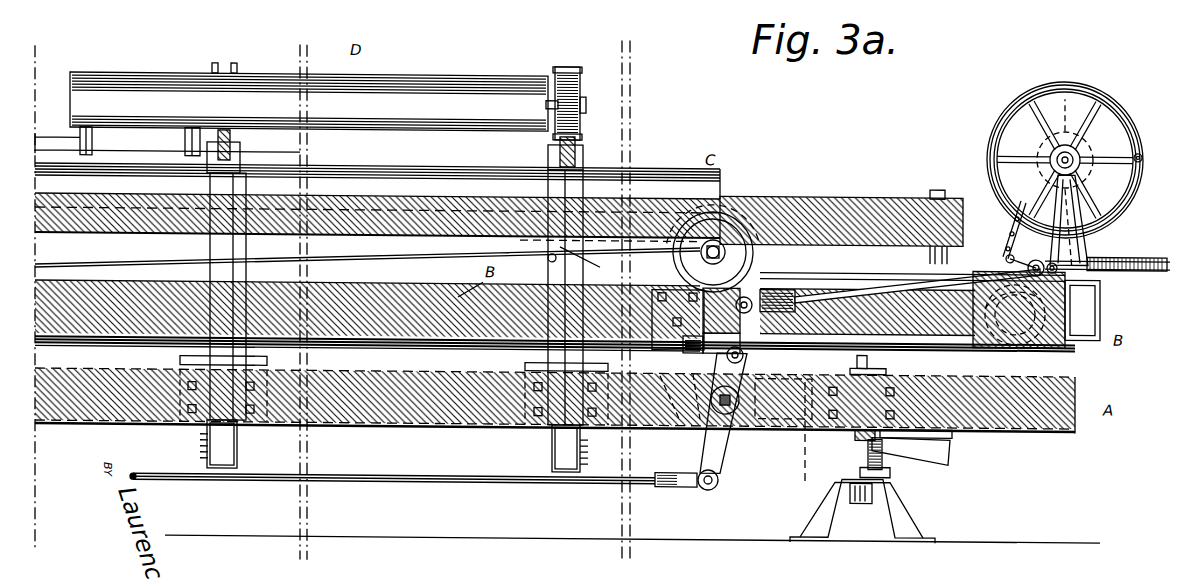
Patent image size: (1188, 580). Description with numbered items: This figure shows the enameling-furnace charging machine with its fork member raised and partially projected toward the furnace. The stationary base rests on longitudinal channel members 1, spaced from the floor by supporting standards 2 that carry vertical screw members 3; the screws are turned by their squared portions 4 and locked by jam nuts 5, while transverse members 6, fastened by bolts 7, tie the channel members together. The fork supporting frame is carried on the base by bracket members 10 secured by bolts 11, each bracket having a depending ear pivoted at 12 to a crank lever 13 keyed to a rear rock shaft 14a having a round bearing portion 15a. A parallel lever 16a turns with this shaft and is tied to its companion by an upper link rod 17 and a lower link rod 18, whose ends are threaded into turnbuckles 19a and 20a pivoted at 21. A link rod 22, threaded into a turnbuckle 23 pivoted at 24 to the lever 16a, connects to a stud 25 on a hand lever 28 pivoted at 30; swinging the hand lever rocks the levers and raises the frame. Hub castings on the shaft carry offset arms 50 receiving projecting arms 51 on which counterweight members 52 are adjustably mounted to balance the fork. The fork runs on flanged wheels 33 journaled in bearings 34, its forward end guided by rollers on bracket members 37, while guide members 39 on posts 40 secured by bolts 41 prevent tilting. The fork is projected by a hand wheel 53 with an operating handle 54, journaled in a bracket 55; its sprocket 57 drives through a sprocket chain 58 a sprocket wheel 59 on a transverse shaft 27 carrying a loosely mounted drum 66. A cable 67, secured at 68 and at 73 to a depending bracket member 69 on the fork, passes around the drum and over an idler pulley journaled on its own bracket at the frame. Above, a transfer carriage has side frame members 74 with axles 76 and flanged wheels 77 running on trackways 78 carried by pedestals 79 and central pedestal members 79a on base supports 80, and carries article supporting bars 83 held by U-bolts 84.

The longitudinal channel members 1 is at (425, 416).
The supporting standards 2 is at (888, 500).
The screw members 3 is at (860, 452).
The squared portions 4 is at (872, 440).
The jam nuts 5 is at (880, 360).
The transverse members 6 is at (852, 364).
The bolts 7 is at (897, 402).
The bracket members 10 is at (655, 340).
The bolts 11 is at (676, 294).
The pivot 12 is at (662, 419).
The crank lever 13 is at (700, 414).
The rear rock shaft 14a is at (736, 414).
The round bearing portion 15a is at (729, 462).
The rear parallel lever 16a is at (716, 480).
The upper link rod 17 is at (423, 336).
The lower link rod 18 is at (412, 476).
The turnbuckle 19a is at (750, 334).
The turnbuckle 20a is at (697, 482).
The pivot 21 is at (752, 345).
The link rod 22 is at (880, 279).
The turnbuckle 23 is at (768, 283).
The pivot 24 is at (750, 283).
The stud 25 is at (1008, 247).
The transverse shaft 27 is at (1100, 308).
The hand lever 28 is at (1107, 255).
The pivot 30 is at (992, 284).
The flanged wheels 33 is at (745, 233).
The bearings 34 is at (725, 212).
The bracket members 37 is at (436, 176).
The guide members 39 is at (862, 204).
The posts 40 is at (932, 260).
The bolts 41 is at (931, 187).
The offset arms 50 is at (783, 399).
The projecting arms 51 is at (799, 440).
The counterweight members 52 is at (950, 450).
The hand wheel 53 is at (1100, 85).
The operating handle 54 is at (1138, 148).
The bracket 55 is at (1097, 231).
The sprocket 57 is at (1065, 182).
The sprocket chain 58 is at (1010, 223).
The sprocket wheel 59 is at (994, 341).
The drum 66 is at (990, 259).
The cable 67 is at (143, 261).
The cable attachment 68 is at (586, 250).
The depending bracket member 69 is at (597, 241).
The cable attachment 73 is at (552, 253).
The side frame members 74 is at (147, 79).
The axles 76 is at (548, 98).
The flanged wheels 77 is at (237, 60).
The trackways 78 is at (232, 148).
The pedestals 79 is at (240, 416).
The central pedestal members 79a is at (207, 322).
The base supports 80 is at (203, 438).
The article supporting bars 83 is at (50, 135).
The U-bolts 84 is at (185, 148).